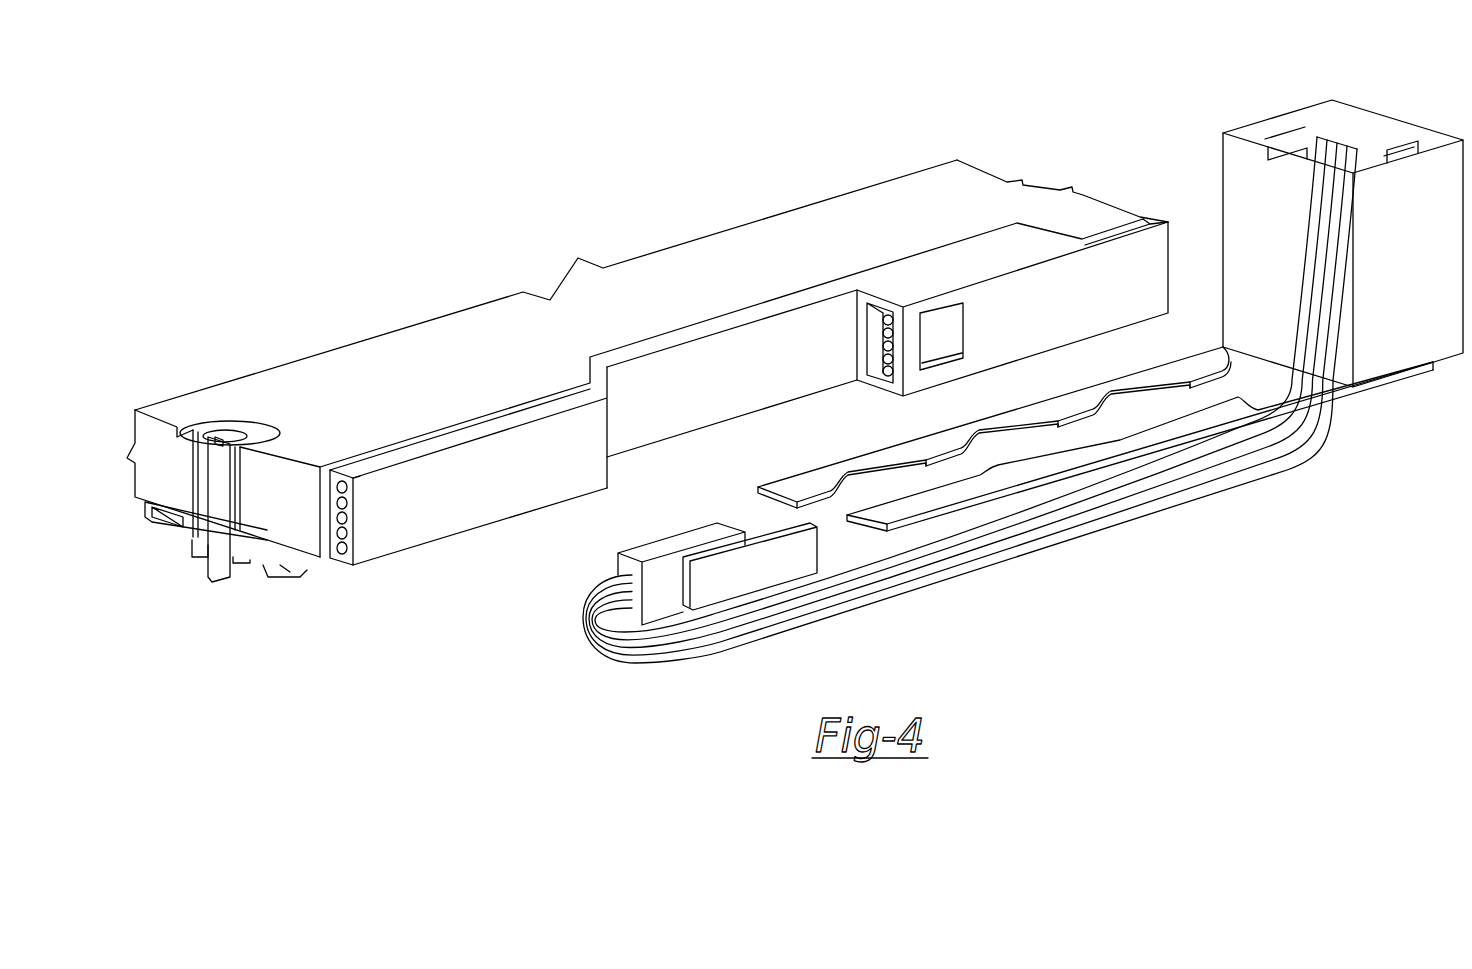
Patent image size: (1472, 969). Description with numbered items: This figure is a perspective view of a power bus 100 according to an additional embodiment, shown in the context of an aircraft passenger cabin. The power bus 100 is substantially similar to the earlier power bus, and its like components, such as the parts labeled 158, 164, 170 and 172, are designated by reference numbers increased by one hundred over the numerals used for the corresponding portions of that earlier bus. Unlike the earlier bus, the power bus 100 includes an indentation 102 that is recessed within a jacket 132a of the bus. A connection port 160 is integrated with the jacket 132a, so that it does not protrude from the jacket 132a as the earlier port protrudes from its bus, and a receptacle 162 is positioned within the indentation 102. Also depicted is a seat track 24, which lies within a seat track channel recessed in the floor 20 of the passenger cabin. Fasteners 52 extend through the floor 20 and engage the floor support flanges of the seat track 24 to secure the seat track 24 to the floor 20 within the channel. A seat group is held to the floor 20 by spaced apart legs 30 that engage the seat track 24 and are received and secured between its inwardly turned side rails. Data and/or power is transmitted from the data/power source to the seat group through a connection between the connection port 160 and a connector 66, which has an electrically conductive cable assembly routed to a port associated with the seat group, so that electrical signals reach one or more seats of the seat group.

The floor 20 is at (348, 367).
The seat track 24 is at (768, 503).
The seat leg 30 is at (1233, 168).
The fasteners 52 is at (216, 437).
The connector 66 is at (656, 538).
The power bus 100 is at (428, 552).
The indentation 102 is at (645, 365).
The jacket 132a is at (333, 562).
The terminal holes 158 is at (338, 505).
The connection port 160 is at (883, 297).
The receptacle 162 is at (860, 337).
The terminals 164 is at (877, 368).
The front wall 170 is at (490, 512).
The window opening 172 is at (957, 338).